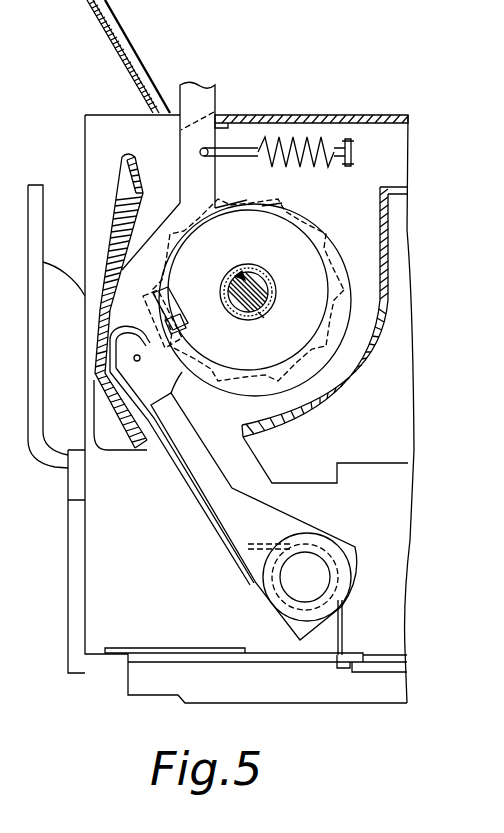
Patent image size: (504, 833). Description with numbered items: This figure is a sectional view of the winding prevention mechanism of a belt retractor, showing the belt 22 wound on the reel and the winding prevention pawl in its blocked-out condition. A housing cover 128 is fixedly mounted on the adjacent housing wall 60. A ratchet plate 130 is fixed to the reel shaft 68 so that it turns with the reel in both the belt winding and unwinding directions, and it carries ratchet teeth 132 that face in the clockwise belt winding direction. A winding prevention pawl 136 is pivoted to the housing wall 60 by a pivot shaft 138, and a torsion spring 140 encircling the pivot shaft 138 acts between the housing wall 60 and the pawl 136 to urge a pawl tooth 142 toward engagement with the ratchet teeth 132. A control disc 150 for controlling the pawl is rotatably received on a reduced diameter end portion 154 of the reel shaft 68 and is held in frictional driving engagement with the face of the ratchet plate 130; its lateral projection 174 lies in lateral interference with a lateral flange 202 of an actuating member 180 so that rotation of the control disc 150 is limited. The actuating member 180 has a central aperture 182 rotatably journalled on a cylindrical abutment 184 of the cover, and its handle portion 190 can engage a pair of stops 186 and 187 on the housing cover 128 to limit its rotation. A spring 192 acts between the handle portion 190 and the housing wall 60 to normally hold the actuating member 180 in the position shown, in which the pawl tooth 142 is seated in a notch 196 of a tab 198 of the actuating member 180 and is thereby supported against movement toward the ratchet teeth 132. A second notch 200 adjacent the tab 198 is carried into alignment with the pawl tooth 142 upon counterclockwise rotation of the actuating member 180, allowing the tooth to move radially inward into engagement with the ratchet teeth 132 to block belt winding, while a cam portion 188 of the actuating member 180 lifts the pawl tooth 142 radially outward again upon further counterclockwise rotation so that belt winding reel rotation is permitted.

The band 22 is at (133, 50).
The housing wall 60 is at (100, 155).
The reel shaft 68 is at (277, 295).
The housing cover 128 is at (300, 115).
The ratchet plate 130 is at (226, 207).
The ratchet teeth 132 is at (264, 206).
The winding prevention pawl 136 is at (200, 486).
The pivot shaft 138 is at (325, 568).
The torsion spring 140 is at (345, 635).
The pawl tooth 142 is at (148, 337).
The control disc 150 is at (320, 222).
The reduced diameter end portion 154 is at (266, 272).
The lateral projection 174 is at (220, 347).
The actuating member 180 is at (302, 252).
The central aperture 182 is at (240, 278).
The cylindrical abutment 184 is at (262, 316).
The stop 186 is at (216, 110).
The stop 187 is at (143, 153).
The cam portion 188 is at (167, 290).
The handle portion 190 is at (199, 92).
The spring 192 is at (333, 150).
The notch 196 is at (134, 357).
The tab 198 is at (182, 372).
The notch 200 is at (178, 318).
The lateral flange 202 is at (153, 295).